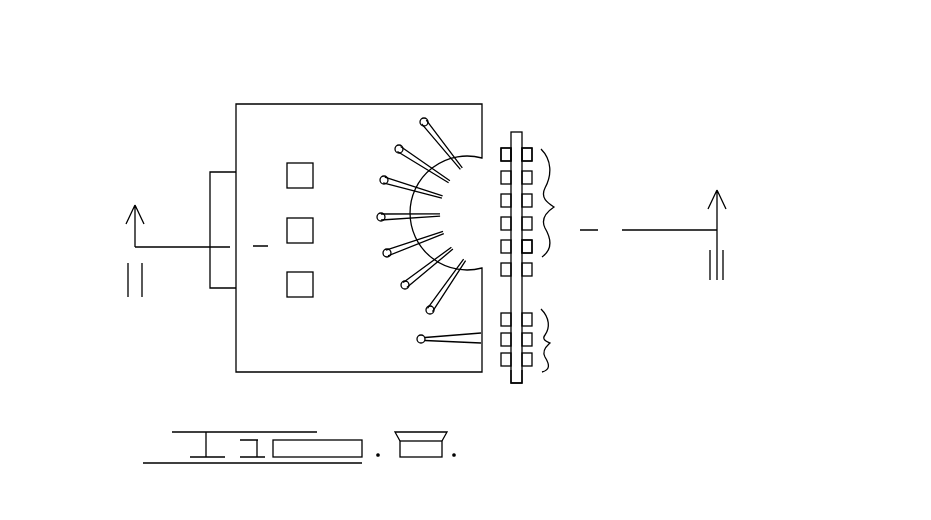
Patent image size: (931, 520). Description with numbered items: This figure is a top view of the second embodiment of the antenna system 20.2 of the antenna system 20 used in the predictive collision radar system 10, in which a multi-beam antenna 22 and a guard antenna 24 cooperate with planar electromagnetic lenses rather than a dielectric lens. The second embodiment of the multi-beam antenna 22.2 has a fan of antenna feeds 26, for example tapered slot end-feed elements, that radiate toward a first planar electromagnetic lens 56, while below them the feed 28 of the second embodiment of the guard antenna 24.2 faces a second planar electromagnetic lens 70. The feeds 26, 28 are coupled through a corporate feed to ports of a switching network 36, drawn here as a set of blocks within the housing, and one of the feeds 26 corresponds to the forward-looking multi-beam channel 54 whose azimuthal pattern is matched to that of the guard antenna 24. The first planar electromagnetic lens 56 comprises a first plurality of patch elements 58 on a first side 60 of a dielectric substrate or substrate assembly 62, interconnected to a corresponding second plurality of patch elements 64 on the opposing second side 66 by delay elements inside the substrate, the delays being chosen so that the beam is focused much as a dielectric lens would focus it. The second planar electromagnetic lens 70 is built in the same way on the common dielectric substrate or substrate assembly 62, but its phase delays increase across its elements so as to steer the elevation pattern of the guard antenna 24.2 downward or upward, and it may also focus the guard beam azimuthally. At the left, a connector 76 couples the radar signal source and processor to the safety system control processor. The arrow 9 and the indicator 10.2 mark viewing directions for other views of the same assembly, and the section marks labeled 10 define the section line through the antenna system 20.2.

The electrical connector assembly 9 is at (688, 158).
The predictive collision radar system 10 is at (424, 243).
The connector system 10.2 is at (715, 85).
The antenna system 20 is at (561, 207).
The antenna system 20.2 is at (561, 207).
The multi-beam antenna 22 is at (592, 242).
The multi-beam antenna 22.2 is at (553, 126).
The guard antenna 24 is at (584, 392).
The guard antenna 24.2 is at (549, 384).
The feeds 26 is at (453, 128).
The feed 28 is at (458, 341).
The switching network 36 is at (302, 226).
The forward-looking multi-beam channel 54 is at (405, 222).
The first planar electromagnetic lens 56 is at (555, 207).
The first plurality of patch elements 58 is at (503, 199).
The first side 60 is at (503, 147).
The dielectric substrate or substrate assembly 62 is at (517, 132).
The second plurality of patch elements 64 is at (545, 268).
The second side 66 is at (534, 140).
The second planar electromagnetic lens 70 is at (550, 343).
The connector 76 is at (220, 180).